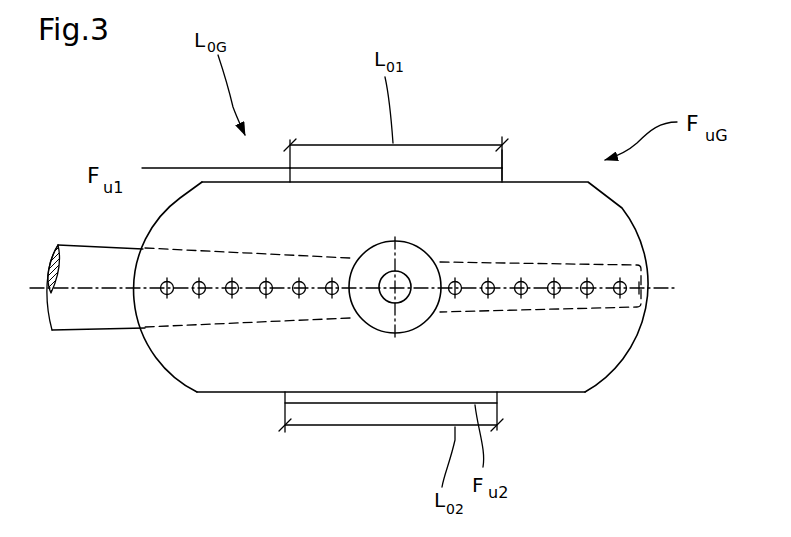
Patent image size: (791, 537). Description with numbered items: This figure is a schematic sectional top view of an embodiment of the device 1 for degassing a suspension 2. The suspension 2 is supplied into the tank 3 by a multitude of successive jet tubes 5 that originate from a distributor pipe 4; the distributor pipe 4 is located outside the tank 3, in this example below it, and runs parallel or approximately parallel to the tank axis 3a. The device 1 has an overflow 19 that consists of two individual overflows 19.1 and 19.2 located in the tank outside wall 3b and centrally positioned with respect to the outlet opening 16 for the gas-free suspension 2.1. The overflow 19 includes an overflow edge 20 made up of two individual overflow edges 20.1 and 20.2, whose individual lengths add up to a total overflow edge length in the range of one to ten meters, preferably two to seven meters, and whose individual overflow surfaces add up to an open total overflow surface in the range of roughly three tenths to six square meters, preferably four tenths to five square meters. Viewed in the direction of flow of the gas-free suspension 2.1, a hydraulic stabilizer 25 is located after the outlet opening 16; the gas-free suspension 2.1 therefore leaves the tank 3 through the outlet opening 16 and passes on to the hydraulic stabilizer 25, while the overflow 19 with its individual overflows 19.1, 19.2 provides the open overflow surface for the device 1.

The device 1 is at (570, 120).
The suspension 2 is at (622, 240).
The gas-free suspension 2.1 is at (375, 315).
The tank 3 is at (623, 205).
The tank axis 3a is at (668, 287).
The tank outside wall 3b is at (570, 392).
The distributor pipe 4 is at (100, 332).
The jet tubes 5 is at (165, 295).
The outlet opening 16 is at (423, 320).
The overflow 19 is at (455, 125).
The individual overflow 19.1 is at (362, 167).
The individual overflow 19.2 is at (388, 403).
The overflow edge 20 is at (325, 128).
The individual overflow edge 20.1 is at (503, 166).
The individual overflow edge 20.2 is at (336, 393).
The hydraulic stabilizer 25 is at (380, 291).